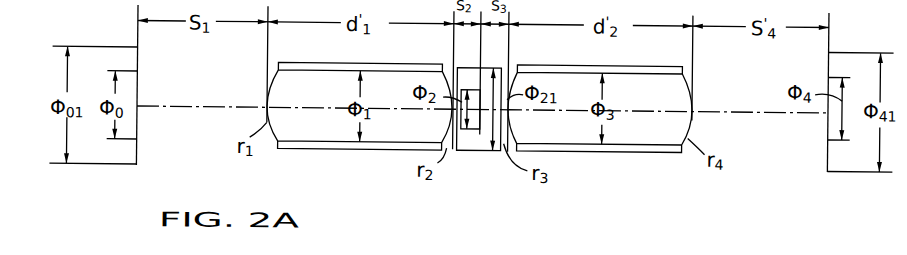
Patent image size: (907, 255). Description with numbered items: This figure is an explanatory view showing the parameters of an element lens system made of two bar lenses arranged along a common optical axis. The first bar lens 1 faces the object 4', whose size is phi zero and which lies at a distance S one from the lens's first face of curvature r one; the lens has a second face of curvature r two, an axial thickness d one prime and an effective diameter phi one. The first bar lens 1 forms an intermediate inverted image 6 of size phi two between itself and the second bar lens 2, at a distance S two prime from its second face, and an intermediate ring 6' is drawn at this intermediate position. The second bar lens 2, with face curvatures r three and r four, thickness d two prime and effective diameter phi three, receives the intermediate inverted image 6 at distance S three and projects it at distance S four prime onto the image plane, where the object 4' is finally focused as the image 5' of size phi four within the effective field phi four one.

The first bar lens 1 is at (327, 138).
The second bar lens 2 is at (617, 133).
The object 4' is at (155, 85).
The image 5' is at (809, 92).
The intermediate inverted image 6 is at (469, 138).
The intermediate ring 6' is at (479, 132).